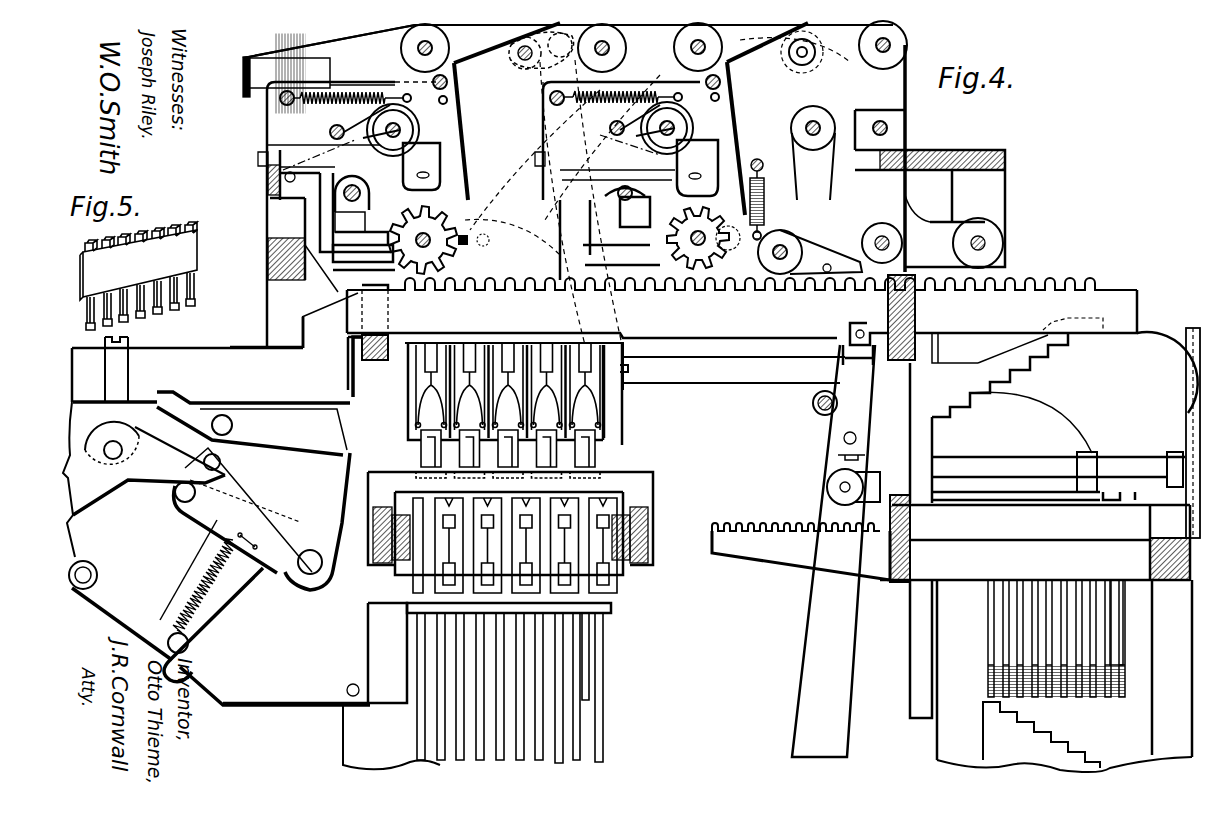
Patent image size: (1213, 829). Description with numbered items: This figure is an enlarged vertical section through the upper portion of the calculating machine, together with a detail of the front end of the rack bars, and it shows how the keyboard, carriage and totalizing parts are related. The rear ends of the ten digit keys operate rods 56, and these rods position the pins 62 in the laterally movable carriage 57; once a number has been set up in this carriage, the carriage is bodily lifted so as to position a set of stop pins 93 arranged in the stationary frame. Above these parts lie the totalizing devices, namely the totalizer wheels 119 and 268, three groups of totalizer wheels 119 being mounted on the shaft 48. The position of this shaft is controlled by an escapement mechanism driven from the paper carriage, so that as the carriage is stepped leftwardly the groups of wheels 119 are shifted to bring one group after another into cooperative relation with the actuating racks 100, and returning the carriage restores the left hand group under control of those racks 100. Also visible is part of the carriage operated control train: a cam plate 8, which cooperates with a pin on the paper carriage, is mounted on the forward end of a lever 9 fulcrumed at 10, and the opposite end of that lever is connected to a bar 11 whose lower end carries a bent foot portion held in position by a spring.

The cam plate 8 is at (243, 97).
The lever 9 is at (328, 44).
The fulcrum 10 is at (432, 45).
The bar 11 is at (585, 60).
The shaft 48 is at (437, 243).
The totalizer wheels 119 is at (412, 295).
The actuating racks 100 is at (742, 311).
The totalizer wheels 268 is at (707, 267).
The stop pins 93 is at (573, 377).
The laterally movable carriage 57 is at (651, 520).
The pins 62 is at (575, 582).
The rods 56 is at (577, 678).